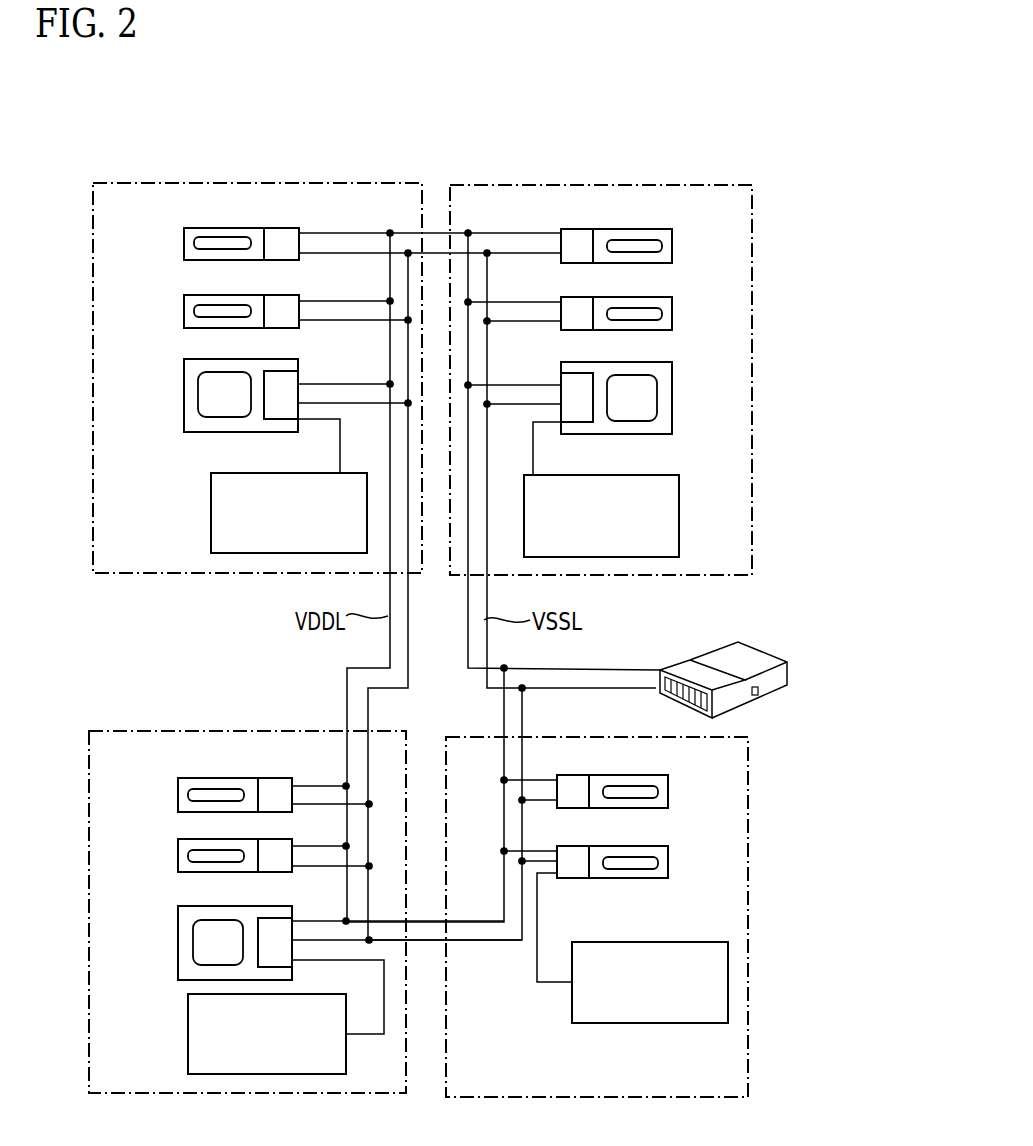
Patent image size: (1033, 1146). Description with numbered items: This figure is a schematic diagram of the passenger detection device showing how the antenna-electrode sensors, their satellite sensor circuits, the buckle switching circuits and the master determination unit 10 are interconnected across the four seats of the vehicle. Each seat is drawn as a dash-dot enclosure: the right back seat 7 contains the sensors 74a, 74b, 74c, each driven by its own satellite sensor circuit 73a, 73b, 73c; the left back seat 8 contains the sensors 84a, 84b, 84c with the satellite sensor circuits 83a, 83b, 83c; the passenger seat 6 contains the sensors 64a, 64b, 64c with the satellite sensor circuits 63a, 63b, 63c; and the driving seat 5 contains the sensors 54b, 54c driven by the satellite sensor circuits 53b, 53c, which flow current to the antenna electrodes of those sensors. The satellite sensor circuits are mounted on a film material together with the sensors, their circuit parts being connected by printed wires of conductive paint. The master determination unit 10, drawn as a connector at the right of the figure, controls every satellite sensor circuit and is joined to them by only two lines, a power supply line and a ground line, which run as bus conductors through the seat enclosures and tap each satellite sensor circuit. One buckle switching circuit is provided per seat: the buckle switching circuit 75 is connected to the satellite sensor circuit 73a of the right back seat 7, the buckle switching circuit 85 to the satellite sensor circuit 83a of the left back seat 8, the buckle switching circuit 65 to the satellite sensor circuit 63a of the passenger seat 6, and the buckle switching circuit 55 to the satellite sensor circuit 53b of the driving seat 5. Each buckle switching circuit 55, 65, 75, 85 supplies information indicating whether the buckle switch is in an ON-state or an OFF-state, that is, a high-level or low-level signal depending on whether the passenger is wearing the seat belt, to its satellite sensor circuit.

The right back seat 7 is at (170, 183).
The left back seat 8 is at (672, 185).
The passenger seat 6 is at (175, 731).
The driving seat 5 is at (748, 890).
The master determination unit 10 is at (750, 646).
The sensor 74c is at (184, 229).
The satellite sensor circuit 73c is at (285, 228).
The sensor 74b is at (184, 296).
The satellite sensor circuit 73b is at (285, 295).
The sensor 74a is at (184, 359).
The satellite sensor circuit 73a is at (285, 371).
The buckle switching circuit 75 is at (211, 513).
The sensor 84c is at (656, 229).
The satellite sensor circuit 83c is at (578, 229).
The sensor 84b is at (656, 297).
The satellite sensor circuit 83b is at (578, 297).
The sensor 84a is at (656, 362).
The satellite sensor circuit 83a is at (578, 373).
The buckle switching circuit 85 is at (648, 475).
The sensor 64c is at (182, 778).
The satellite sensor circuit 63c is at (278, 778).
The sensor 64b is at (182, 839).
The satellite sensor circuit 63b is at (278, 839).
The sensor 64a is at (182, 906).
The satellite sensor circuit 63a is at (278, 918).
The buckle switching circuit 65 is at (188, 1040).
The sensor 54c is at (668, 790).
The satellite sensor circuit 53c is at (577, 775).
The sensor 54b is at (668, 861).
The satellite sensor circuit 53b is at (577, 846).
The buckle switching circuit 55 is at (648, 942).